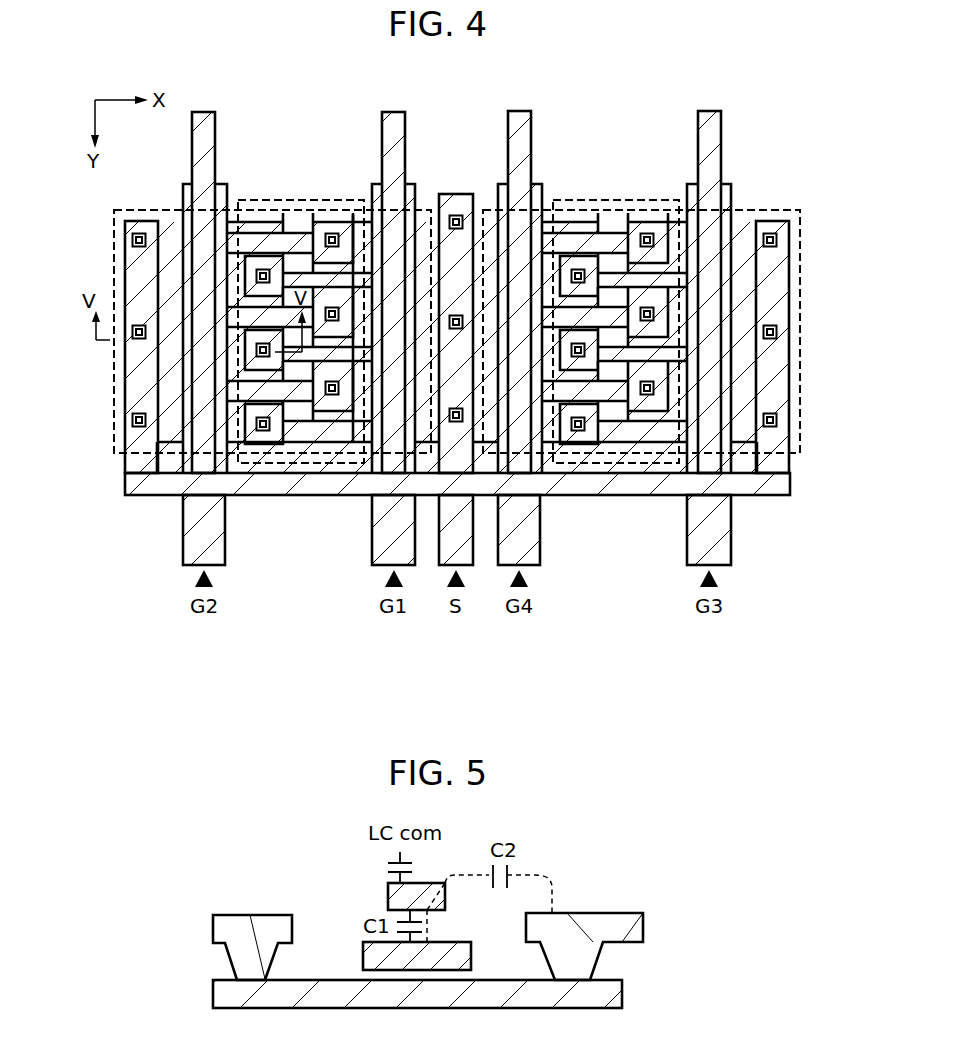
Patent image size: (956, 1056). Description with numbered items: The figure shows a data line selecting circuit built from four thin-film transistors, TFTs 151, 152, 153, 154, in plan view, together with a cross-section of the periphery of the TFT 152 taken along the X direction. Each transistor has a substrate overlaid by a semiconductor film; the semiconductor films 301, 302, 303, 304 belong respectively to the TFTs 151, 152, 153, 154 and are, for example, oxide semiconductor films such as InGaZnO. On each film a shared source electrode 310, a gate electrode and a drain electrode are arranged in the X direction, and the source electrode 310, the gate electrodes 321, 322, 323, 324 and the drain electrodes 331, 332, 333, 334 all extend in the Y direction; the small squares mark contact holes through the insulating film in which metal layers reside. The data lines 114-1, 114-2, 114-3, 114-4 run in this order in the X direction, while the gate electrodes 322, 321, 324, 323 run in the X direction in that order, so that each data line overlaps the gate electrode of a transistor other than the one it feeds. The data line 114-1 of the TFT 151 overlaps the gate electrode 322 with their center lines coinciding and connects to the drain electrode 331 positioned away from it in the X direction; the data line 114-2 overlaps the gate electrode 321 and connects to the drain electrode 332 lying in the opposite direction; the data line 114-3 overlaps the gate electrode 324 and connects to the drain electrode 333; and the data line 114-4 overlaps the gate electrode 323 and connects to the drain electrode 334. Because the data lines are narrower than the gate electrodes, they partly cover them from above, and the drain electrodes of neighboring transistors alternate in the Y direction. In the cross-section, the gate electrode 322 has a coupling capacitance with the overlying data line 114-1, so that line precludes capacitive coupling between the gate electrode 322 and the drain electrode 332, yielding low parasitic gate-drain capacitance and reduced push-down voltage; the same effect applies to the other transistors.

In FIG. 4, the data line 114-1 is at (214, 128).
In FIG. 5, the data line 114-1 is at (390, 895).
In FIG. 4, the data line 114-2 is at (383, 130).
In FIG. 4, the data line 114-3 is at (531, 131).
In FIG. 4, the data line 114-4 is at (700, 133).
In FIG. 4, the TFT 151 is at (305, 200).
In FIG. 4, the TFT 152 is at (138, 209).
In FIG. 4, the TFT 153 is at (790, 210).
In FIG. 4, the TFT 154 is at (597, 200).
In FIG. 4, the semiconductor film 301 is at (367, 216).
In FIG. 5, the semiconductor film 301 is at (617, 992).
In FIG. 4, the semiconductor film 302 is at (252, 226).
In FIG. 4, the semiconductor film 303 is at (758, 222).
In FIG. 4, the semiconductor film 304 is at (577, 226).
In FIG. 4, the source electrode 310 is at (135, 462).
In FIG. 5, the source electrode 310 is at (250, 914).
In FIG. 4, the gate electrode 321 is at (378, 548).
In FIG. 4, the gate electrode 322 is at (192, 540).
In FIG. 5, the gate electrode 322 is at (490, 931).
In FIG. 4, the gate electrode 323 is at (723, 545).
In FIG. 4, the gate electrode 324 is at (541, 550).
In FIG. 4, the drain electrode 331 is at (328, 395).
In FIG. 4, the drain electrode 332 is at (266, 432).
In FIG. 5, the drain electrode 332 is at (597, 920).
In FIG. 4, the drain electrode 333 is at (648, 396).
In FIG. 4, the drain electrode 334 is at (581, 432).